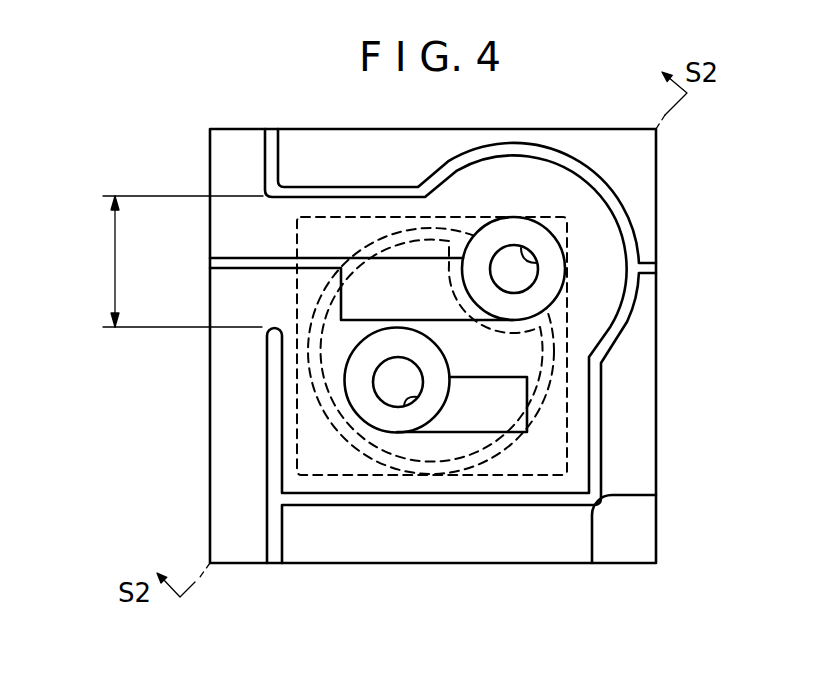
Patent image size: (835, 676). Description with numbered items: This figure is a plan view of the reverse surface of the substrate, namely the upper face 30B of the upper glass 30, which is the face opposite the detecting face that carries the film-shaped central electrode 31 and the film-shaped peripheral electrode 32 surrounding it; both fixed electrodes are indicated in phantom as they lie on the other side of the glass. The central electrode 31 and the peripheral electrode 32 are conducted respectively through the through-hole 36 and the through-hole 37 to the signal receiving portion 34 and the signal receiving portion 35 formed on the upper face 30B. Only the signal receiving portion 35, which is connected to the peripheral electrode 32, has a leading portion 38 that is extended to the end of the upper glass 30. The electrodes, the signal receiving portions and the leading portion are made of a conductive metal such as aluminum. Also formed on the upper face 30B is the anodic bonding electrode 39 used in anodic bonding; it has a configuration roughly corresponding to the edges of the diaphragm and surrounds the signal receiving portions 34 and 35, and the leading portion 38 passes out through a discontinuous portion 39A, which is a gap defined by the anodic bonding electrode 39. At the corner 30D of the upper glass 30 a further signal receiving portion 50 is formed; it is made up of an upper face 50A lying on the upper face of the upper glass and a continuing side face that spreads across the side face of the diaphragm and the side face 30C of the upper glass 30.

The upper glass 30 is at (656, 165).
The upper face 30B is at (635, 441).
The side face 30C is at (656, 480).
The corner 30D is at (656, 563).
The central electrode 31 is at (318, 396).
The peripheral electrode 32 is at (300, 452).
The signal receiving portion 34 is at (505, 398).
The signal receiving portion 35 is at (547, 285).
The through-hole 36 is at (404, 403).
The through-hole 37 is at (540, 263).
The leading portion 38 is at (240, 258).
The anodic bonding electrode 39 is at (268, 366).
The discontinuous portion 39A is at (115, 260).
The signal receiving portion 50 is at (645, 561).
The upper face 50A is at (632, 545).